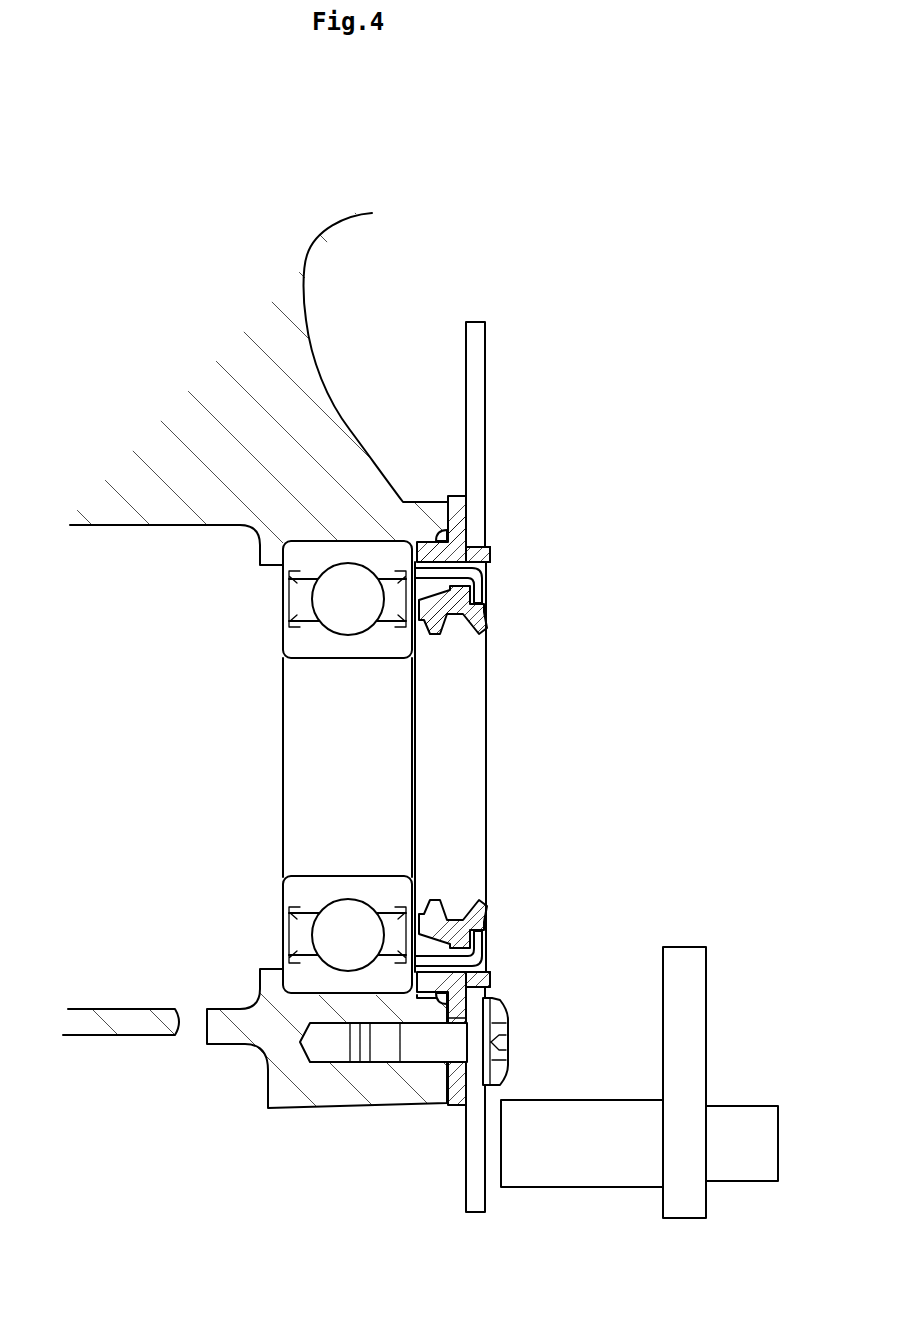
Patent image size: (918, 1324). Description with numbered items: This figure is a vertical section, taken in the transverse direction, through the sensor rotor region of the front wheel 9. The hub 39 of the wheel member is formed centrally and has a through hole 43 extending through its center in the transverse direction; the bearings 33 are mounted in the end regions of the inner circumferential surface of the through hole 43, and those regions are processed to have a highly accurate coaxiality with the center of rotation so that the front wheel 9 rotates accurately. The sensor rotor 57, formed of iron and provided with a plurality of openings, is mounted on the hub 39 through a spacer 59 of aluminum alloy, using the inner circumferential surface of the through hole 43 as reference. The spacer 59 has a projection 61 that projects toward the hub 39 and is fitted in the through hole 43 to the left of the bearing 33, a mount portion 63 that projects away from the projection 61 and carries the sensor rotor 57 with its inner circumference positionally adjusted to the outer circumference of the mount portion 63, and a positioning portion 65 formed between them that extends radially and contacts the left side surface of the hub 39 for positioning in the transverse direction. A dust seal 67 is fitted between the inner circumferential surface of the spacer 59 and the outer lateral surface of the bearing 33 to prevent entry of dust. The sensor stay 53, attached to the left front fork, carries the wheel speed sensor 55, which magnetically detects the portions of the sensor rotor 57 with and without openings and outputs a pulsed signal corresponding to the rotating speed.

The front wheel 9 is at (526, 171).
The bearing 33 is at (284, 603).
The hub 39 is at (305, 326).
The through hole 43 is at (150, 776).
The sensor stay 53 is at (704, 984).
The wheel speed sensor 55 is at (572, 1184).
The sensor rotor 57 is at (480, 344).
The spacer 59 is at (492, 551).
The projection 61 is at (438, 530).
The mount portion 63 is at (476, 546).
The positioning portion 65 is at (456, 494).
The dust seal 67 is at (487, 595).